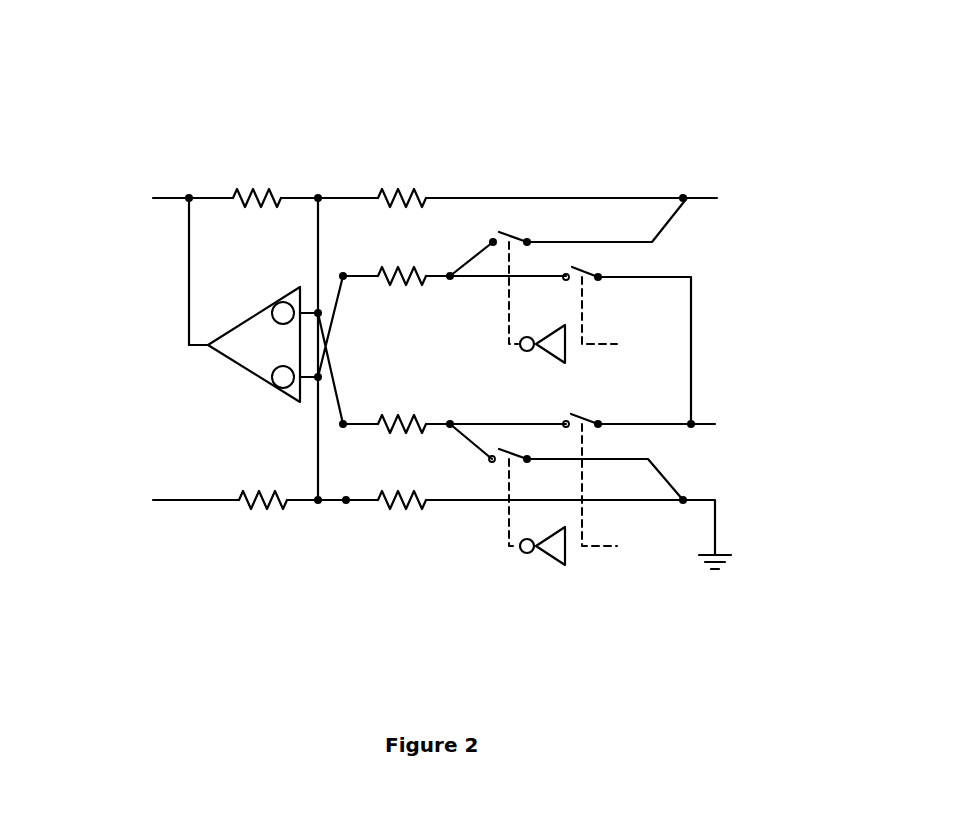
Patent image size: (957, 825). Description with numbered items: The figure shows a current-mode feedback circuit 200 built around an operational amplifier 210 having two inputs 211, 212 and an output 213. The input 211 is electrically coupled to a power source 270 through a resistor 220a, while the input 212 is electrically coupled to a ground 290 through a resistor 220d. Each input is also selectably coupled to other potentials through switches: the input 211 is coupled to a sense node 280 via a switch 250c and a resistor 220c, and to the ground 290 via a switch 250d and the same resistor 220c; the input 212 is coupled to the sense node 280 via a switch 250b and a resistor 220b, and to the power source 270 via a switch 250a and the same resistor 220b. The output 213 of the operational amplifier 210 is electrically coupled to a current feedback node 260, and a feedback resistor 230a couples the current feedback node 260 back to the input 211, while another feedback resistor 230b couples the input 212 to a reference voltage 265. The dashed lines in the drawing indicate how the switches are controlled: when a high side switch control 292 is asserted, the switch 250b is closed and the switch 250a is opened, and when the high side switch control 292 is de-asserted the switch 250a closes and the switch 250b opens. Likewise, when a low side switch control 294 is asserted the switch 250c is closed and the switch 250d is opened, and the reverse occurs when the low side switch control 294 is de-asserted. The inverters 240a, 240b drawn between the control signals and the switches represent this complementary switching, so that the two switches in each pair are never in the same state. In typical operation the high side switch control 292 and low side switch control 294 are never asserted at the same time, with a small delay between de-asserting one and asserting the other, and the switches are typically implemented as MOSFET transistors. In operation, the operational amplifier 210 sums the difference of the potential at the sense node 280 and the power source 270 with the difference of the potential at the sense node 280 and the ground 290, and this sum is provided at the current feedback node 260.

The current-mode feedback circuit 200 is at (197, 86).
The operational amplifier 210 is at (248, 372).
The input 211 is at (317, 310).
The input 212 is at (317, 378).
The output 213 is at (197, 343).
The resistor 220a is at (417, 192).
The resistor 220b is at (418, 276).
The resistor 220c is at (414, 415).
The resistor 220d is at (409, 508).
The feedback resistor 230a is at (271, 192).
The feedback resistor 230b is at (288, 508).
The inverter 240a is at (550, 356).
The inverter 240b is at (550, 561).
The switch 250a is at (510, 240).
The switch 250b is at (588, 277).
The switch 250c is at (586, 423).
The switch 250d is at (510, 457).
The current feedback node 260 is at (72, 240).
The reference voltage 265 is at (130, 512).
The power source 270 is at (735, 213).
The sense node 280 is at (742, 412).
The ground 290 is at (750, 505).
The high side switch control 292 is at (656, 313).
The low side switch control 294 is at (621, 584).